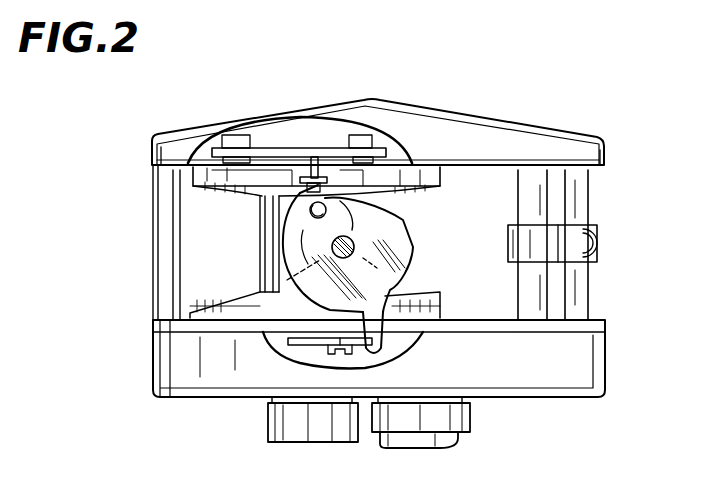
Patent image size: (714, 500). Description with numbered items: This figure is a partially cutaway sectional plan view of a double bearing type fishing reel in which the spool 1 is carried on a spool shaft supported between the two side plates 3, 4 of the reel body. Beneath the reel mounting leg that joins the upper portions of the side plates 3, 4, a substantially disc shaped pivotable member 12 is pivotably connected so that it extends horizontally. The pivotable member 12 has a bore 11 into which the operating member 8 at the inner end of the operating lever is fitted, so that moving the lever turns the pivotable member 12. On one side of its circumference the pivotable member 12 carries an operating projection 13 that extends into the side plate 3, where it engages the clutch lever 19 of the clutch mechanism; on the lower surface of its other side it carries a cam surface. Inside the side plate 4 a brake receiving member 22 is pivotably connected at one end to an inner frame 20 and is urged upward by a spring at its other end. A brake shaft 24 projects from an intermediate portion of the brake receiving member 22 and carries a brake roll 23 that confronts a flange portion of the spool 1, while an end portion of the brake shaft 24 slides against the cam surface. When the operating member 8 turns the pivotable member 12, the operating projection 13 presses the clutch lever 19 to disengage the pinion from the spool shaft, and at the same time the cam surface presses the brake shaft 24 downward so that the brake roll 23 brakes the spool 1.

The spool 1 is at (265, 200).
The side plate 3 is at (593, 377).
The side plate 4 is at (531, 137).
The operating member 8 is at (328, 208).
The bore 11 is at (322, 251).
The pivotable member 12 is at (283, 247).
The operating projection 13 is at (383, 347).
The clutch lever 19 is at (362, 346).
The inner frame 20 is at (600, 170).
The brake receiving member 22 is at (262, 145).
The brake roll 23 is at (302, 175).
The brake shaft 24 is at (315, 162).